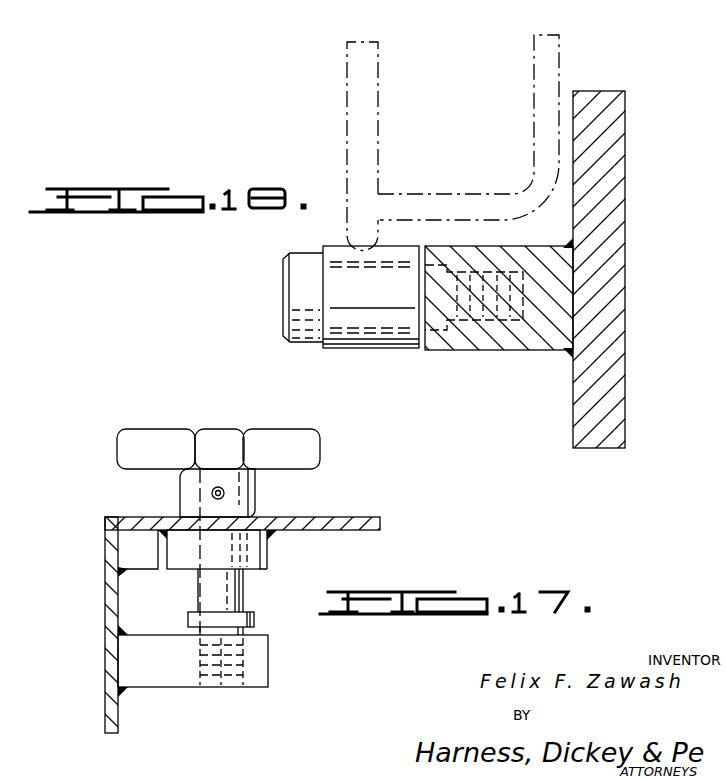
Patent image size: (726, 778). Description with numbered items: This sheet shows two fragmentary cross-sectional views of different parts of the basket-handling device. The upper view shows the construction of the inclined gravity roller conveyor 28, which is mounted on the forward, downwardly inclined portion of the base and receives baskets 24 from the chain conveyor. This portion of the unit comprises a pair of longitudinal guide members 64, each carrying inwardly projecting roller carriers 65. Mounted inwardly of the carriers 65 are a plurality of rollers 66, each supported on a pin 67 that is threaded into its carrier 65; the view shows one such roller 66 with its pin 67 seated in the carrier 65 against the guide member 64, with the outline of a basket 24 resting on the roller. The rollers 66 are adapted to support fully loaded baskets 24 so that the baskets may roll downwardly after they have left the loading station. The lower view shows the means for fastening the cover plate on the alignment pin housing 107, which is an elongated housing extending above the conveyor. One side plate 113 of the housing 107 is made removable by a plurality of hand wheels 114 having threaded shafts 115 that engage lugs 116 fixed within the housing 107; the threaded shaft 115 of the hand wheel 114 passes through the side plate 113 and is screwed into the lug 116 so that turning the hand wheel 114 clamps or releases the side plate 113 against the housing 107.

In FIG. 16, the baskets 24 is at (356, 87).
In FIG. 16, the longitudinal guide members 64 is at (617, 300).
In FIG. 16, the roller carriers 65 is at (467, 333).
In FIG. 16, the gravity roller conveyor 28 is at (518, 351).
In FIG. 16, the rollers 66 is at (357, 320).
In FIG. 16, the pins 67 is at (297, 315).
In FIG. 17, the alignment pin housing 107 is at (107, 603).
In FIG. 17, the side plate 113 is at (338, 520).
In FIG. 17, the hand wheels 114 is at (310, 452).
In FIG. 17, the threaded shafts 115 is at (240, 592).
In FIG. 17, the lugs 116 is at (260, 667).